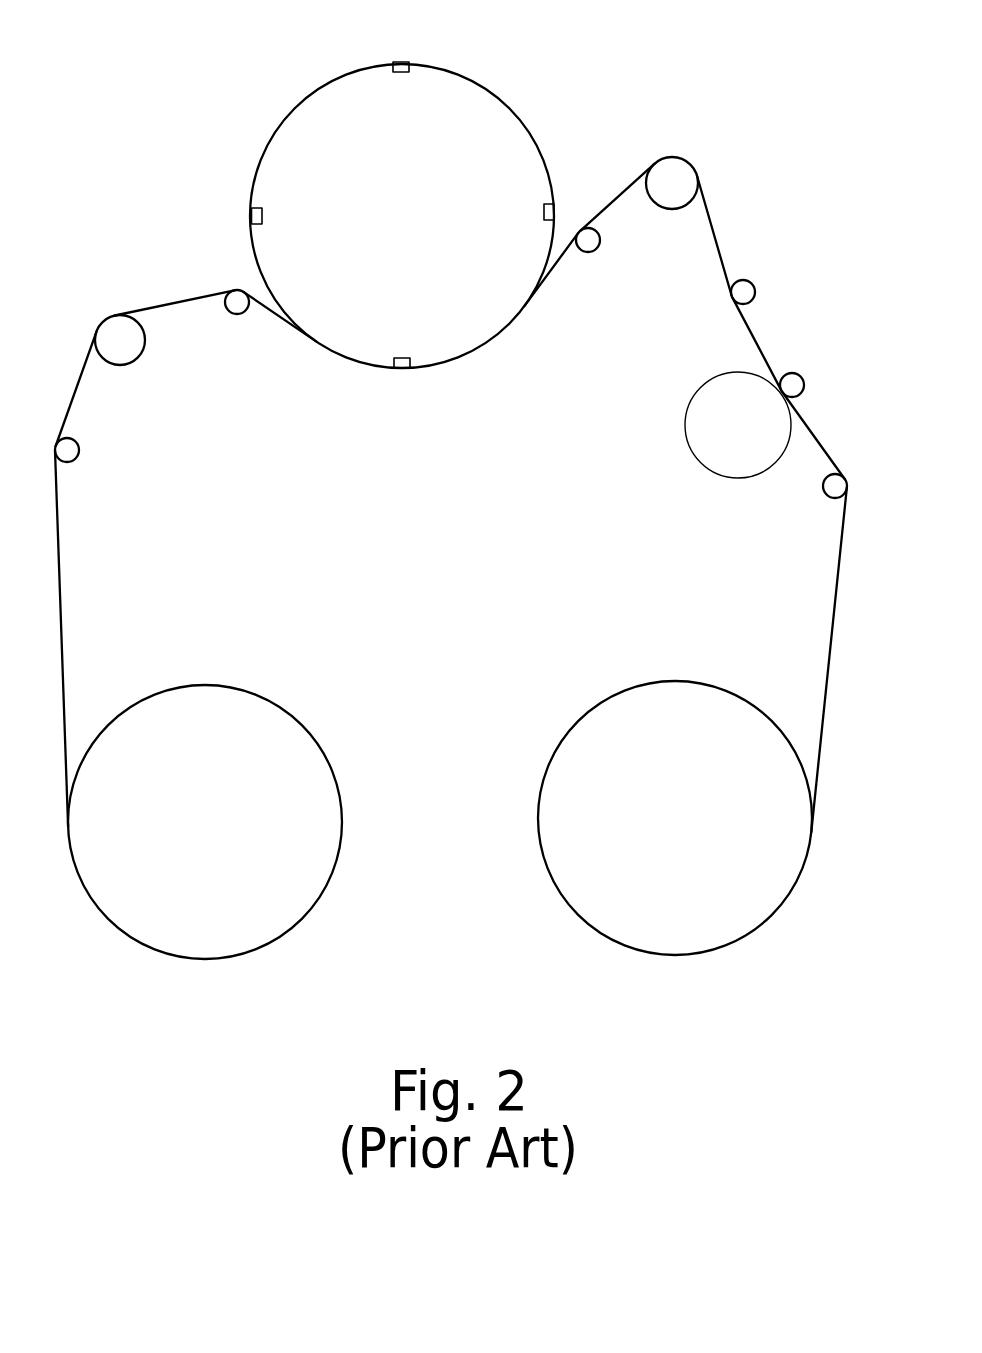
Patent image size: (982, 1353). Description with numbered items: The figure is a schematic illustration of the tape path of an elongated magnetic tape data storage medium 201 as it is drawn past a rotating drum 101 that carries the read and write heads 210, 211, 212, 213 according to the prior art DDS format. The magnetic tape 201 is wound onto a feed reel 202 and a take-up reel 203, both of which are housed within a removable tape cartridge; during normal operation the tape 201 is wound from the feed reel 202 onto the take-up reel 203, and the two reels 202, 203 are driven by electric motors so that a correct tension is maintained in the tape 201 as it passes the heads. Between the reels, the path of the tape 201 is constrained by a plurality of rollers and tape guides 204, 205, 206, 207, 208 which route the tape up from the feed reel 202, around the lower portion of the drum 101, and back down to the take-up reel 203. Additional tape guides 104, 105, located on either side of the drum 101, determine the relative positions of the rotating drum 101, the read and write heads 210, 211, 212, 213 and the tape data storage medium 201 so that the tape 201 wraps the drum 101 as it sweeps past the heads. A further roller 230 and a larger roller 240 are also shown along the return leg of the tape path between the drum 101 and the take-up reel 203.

The drum 101 is at (489, 106).
The tape guide 104 is at (240, 314).
The tape guide 105 is at (589, 252).
The magnetic tape data storage medium 201 is at (60, 580).
The feed reel 202 is at (342, 812).
The take-up reel 203 is at (537, 818).
The roller or tape guide 204 is at (79, 451).
The roller or tape guide 205 is at (114, 315).
The roller or tape guide 206 is at (673, 157).
The roller or tape guide 207 is at (755, 293).
The roller or tape guide 208 is at (823, 489).
The read and write head 210 is at (401, 62).
The read and write head 211 is at (554, 213).
The read and write head 212 is at (402, 358).
The read and write head 213 is at (252, 219).
The roller 230 is at (803, 382).
The roller 240 is at (687, 427).